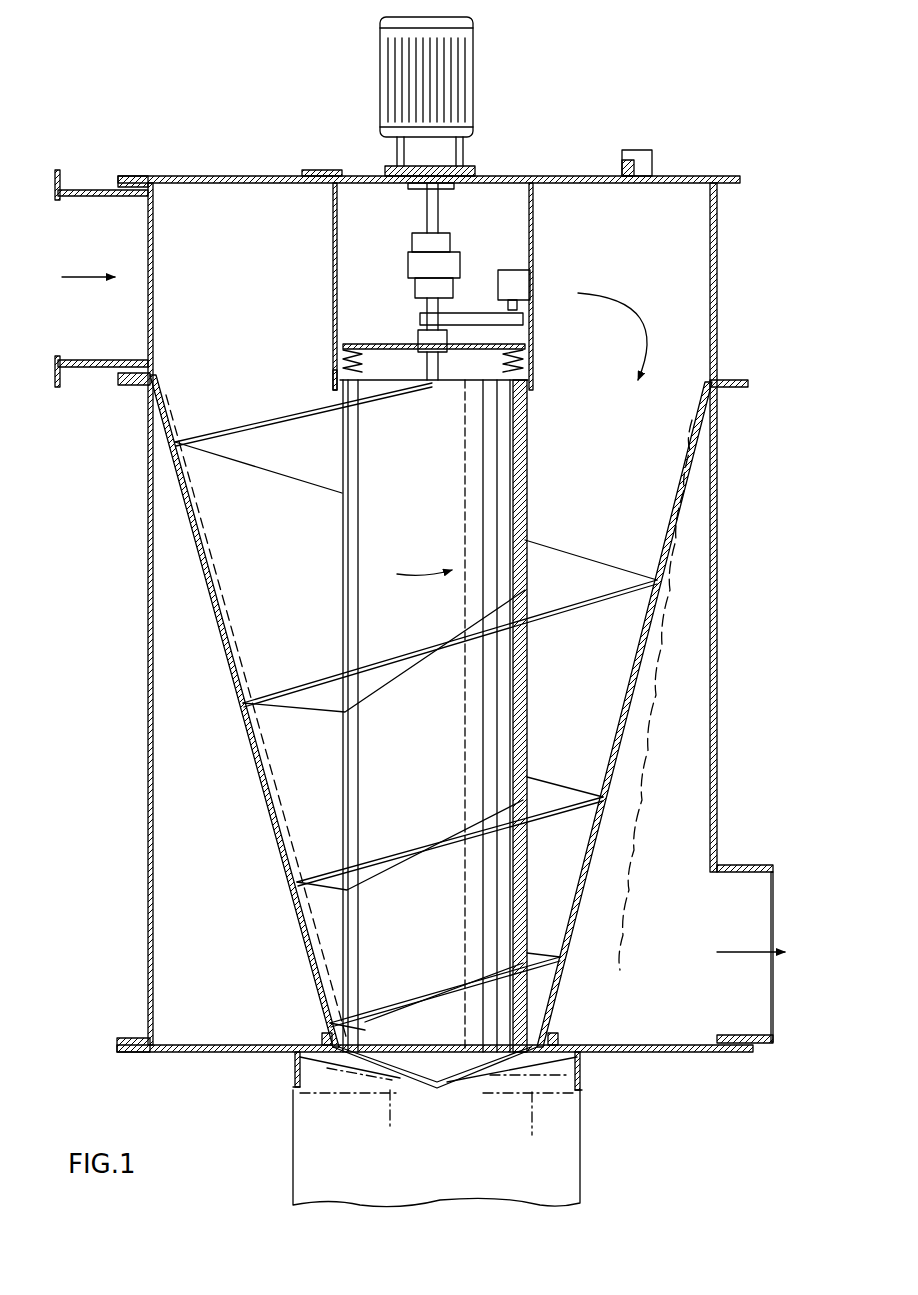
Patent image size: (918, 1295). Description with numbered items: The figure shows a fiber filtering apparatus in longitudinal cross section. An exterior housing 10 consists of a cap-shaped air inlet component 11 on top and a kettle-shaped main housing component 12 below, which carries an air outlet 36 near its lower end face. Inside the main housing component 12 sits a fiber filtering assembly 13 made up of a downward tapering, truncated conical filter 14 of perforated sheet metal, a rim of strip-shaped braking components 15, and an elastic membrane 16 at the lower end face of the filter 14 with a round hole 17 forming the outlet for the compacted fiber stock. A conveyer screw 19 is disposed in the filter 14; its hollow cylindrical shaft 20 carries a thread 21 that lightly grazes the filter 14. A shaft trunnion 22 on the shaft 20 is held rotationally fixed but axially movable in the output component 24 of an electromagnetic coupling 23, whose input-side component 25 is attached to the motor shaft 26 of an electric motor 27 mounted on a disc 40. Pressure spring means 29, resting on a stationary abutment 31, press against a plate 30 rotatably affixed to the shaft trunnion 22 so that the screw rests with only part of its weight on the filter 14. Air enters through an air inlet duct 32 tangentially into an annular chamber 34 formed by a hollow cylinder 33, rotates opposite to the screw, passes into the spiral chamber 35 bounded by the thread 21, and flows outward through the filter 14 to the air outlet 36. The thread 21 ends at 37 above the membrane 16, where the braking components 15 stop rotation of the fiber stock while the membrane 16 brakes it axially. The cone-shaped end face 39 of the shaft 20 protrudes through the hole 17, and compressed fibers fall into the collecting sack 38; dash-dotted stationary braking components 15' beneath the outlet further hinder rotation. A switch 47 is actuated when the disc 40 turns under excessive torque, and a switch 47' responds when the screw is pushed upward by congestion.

The exterior housing 10 is at (204, 172).
The air inlet component 11 is at (720, 248).
The main housing component 12 is at (148, 758).
The fiber filtering assembly 13 is at (198, 587).
The filter 14 is at (228, 655).
The braking components 15 is at (432, 1023).
The stationary braking components 15' is at (436, 1114).
The membrane 16 is at (330, 1068).
The hole 17 is at (395, 1082).
The conveyer screw 19 is at (470, 716).
The hollow cylindrical shaft 20 is at (503, 533).
The thread 21 is at (203, 443).
The shaft trunnion 22 is at (422, 338).
The electromagnetic coupling 23 is at (466, 248).
The output component 24 is at (427, 286).
The input-side component 25 is at (418, 245).
The motor shaft 26 is at (438, 202).
The electric motor 27 is at (453, 110).
The pressure spring means 29 is at (340, 360).
The plate 30 is at (483, 385).
The stationary abutment 31 is at (332, 382).
The air inlet duct 32 is at (58, 170).
The hollow cylinder 33 is at (333, 222).
The annular chamber 34 is at (660, 215).
The spiral chamber 35 is at (620, 688).
The air outlet 36 is at (740, 865).
The lower end of the thread 37 is at (375, 1030).
The collecting sack 38 is at (580, 1160).
The cone-shaped end face 39 is at (465, 1080).
The disc 40 is at (340, 170).
The electrical switch 47 is at (646, 141).
The stationary switch 47' is at (476, 271).